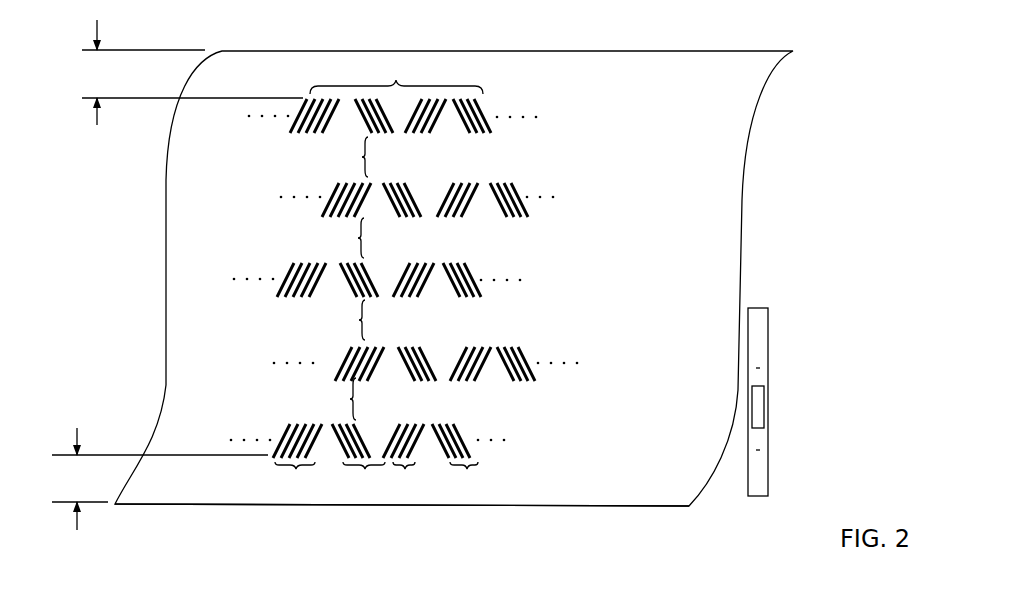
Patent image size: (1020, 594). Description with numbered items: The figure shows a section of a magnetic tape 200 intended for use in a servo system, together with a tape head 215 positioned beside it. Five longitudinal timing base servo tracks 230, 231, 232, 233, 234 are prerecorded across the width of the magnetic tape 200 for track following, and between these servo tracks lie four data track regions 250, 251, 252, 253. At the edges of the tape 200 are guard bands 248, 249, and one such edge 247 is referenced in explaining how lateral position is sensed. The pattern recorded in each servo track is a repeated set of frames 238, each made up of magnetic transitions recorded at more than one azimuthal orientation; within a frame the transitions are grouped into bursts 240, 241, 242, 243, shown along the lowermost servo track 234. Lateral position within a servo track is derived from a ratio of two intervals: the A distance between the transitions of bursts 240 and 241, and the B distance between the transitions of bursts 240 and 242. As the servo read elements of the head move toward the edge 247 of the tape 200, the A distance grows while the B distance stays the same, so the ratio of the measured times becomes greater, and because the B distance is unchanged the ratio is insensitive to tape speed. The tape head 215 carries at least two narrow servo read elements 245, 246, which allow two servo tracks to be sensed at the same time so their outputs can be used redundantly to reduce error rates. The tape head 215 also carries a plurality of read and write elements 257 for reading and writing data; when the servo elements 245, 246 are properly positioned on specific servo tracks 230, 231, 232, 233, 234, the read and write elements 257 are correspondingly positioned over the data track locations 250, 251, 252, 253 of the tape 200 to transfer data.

The magnetic tape 200 is at (532, 50).
The tape head 215 is at (781, 396).
The servo track 230 is at (268, 125).
The servo track 231 is at (300, 210).
The servo track 232 is at (272, 288).
The servo track 233 is at (333, 370).
The servo track 234 is at (449, 459).
The frame 238 is at (396, 76).
The burst 240 is at (297, 458).
The burst 241 is at (358, 459).
The burst 242 is at (406, 459).
The servo burst 243 is at (458, 459).
The servo read element 245 is at (755, 451).
The servo read element 246 is at (755, 369).
The edge 247 is at (525, 508).
The guard band 248 is at (99, 53).
The guard band 249 is at (79, 459).
The data track region 250 is at (363, 166).
The data track region 251 is at (358, 246).
The data track region 252 is at (360, 326).
The data track region 253 is at (350, 406).
The read and write elements 257 is at (766, 404).